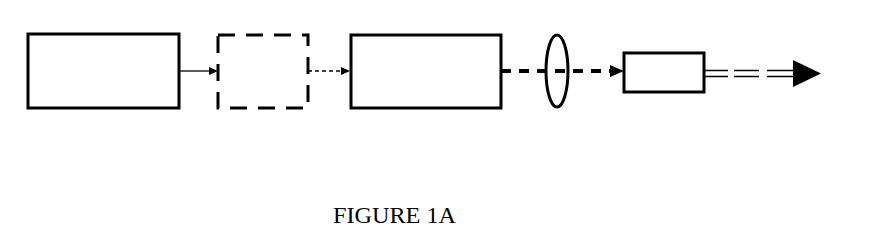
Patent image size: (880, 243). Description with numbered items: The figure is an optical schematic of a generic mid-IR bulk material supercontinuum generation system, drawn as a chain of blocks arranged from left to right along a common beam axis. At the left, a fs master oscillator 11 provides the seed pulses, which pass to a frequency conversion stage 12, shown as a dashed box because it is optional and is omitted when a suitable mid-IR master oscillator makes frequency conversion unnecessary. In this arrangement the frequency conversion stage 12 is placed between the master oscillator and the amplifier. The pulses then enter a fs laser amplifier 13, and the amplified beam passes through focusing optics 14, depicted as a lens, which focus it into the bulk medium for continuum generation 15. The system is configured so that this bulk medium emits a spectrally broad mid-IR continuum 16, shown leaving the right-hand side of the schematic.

The fs master oscillator 11 is at (77, 93).
The frequency conversion stage 12 is at (259, 91).
The fs laser amplifier 13 is at (439, 89).
The focusing optics 14 is at (557, 90).
The bulk medium for continuum generation 15 is at (661, 75).
The spectrally broad mid-IR continuum 16 is at (751, 80).